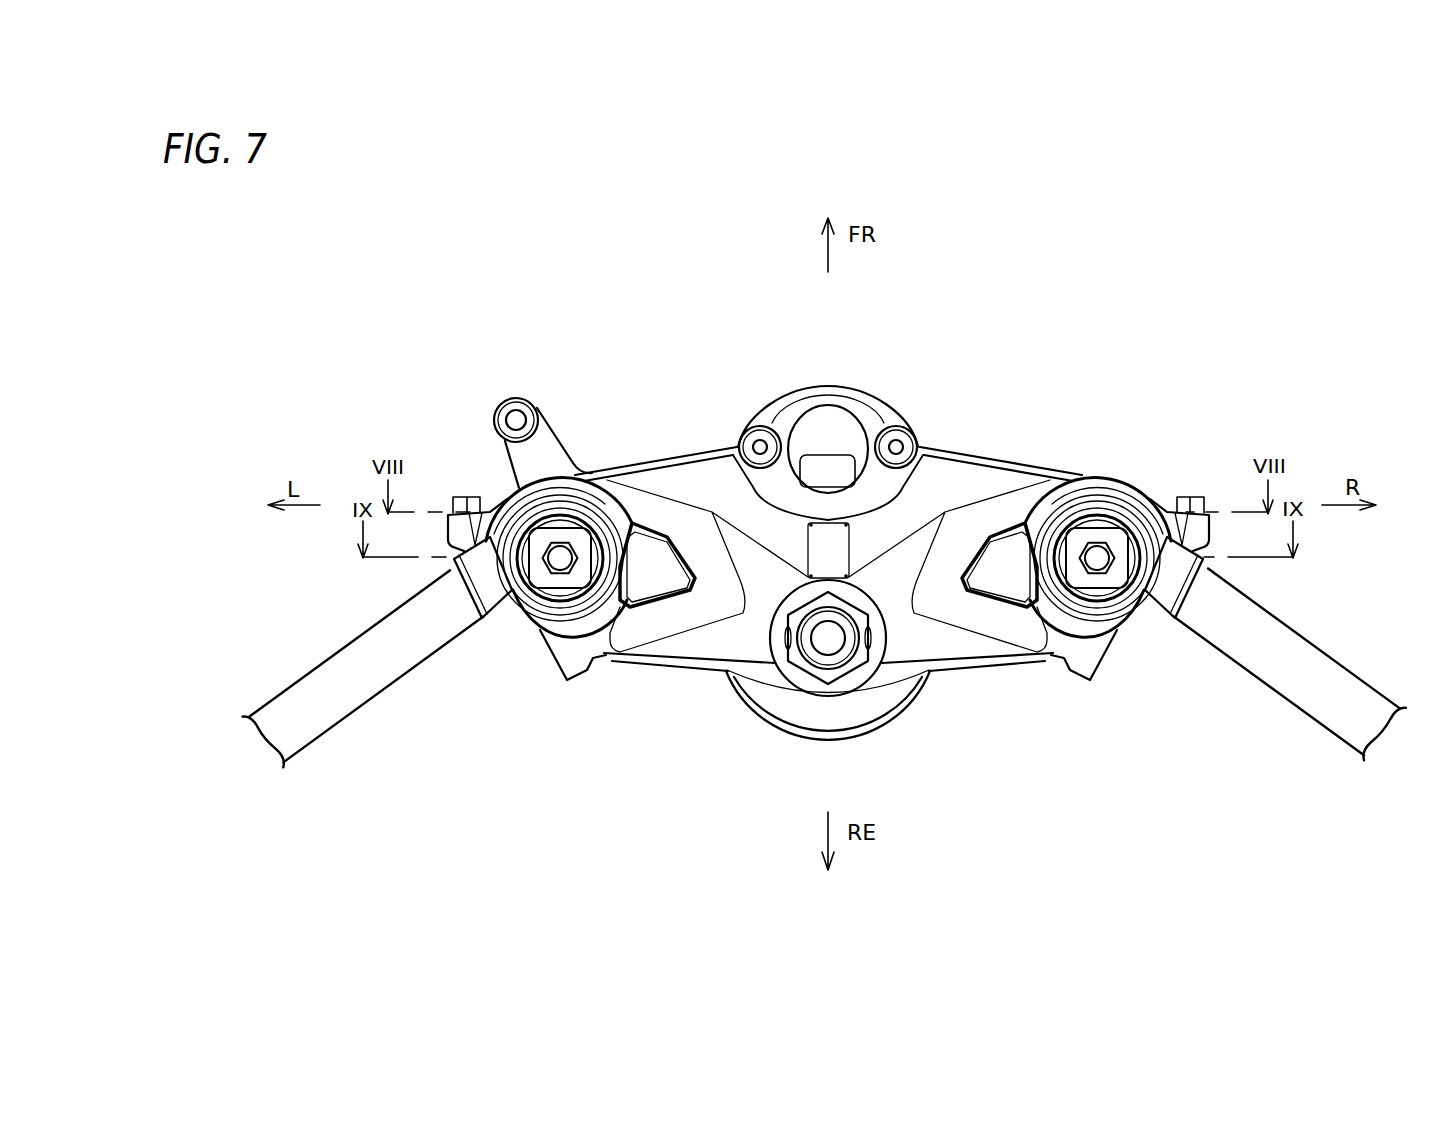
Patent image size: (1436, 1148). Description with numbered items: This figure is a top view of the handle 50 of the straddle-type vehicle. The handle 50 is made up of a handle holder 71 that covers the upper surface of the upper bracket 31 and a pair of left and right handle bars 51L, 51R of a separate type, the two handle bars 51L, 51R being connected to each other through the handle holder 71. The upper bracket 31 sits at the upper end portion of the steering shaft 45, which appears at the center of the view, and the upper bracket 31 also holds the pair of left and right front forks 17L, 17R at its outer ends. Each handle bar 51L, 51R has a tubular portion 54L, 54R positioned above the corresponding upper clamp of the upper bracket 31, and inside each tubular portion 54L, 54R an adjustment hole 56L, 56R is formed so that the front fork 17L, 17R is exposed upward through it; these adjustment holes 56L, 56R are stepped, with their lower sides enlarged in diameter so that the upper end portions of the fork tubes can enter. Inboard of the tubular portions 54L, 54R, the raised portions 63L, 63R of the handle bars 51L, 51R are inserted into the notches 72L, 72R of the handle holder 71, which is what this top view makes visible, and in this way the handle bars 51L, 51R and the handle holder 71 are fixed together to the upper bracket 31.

The front fork 17L is at (558, 580).
The front fork 17R is at (1100, 582).
The upper bracket 31 is at (790, 488).
The steering shaft 45 is at (833, 648).
The handle 50 is at (516, 345).
The handle bar 51L is at (360, 647).
The handle bar 51R is at (1295, 653).
The tubular portion 54L is at (530, 502).
The tubular portion 54R is at (1127, 480).
The adjustment hole 56L is at (558, 541).
The adjustment hole 56R is at (1095, 527).
The raised portion 63L is at (643, 540).
The raised portion 63R is at (1017, 553).
The handle holder 71 is at (929, 487).
The notch 72L is at (667, 548).
The notch 72R is at (995, 540).